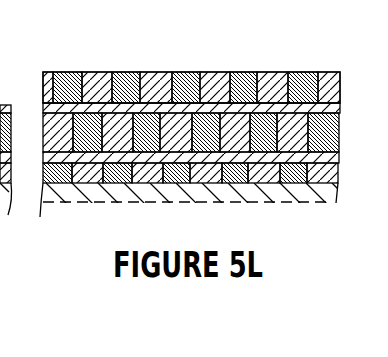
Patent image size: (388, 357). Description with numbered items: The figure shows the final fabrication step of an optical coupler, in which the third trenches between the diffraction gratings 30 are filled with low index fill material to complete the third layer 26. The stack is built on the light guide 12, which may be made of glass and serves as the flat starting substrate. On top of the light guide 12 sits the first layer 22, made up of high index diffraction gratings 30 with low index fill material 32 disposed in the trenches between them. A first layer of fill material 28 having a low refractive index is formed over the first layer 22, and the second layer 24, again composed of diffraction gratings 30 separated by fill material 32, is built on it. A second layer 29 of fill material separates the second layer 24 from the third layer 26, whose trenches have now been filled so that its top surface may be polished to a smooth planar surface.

The light guide 12 is at (56, 196).
The first layer 22 is at (338, 178).
The second layer 24 is at (340, 143).
The third layer 26 is at (336, 82).
The first layer of fill material 28 is at (340, 155).
The second layer of fill material 29 is at (340, 108).
The diffraction gratings 30 is at (135, 72).
The fill material 32 is at (277, 75).